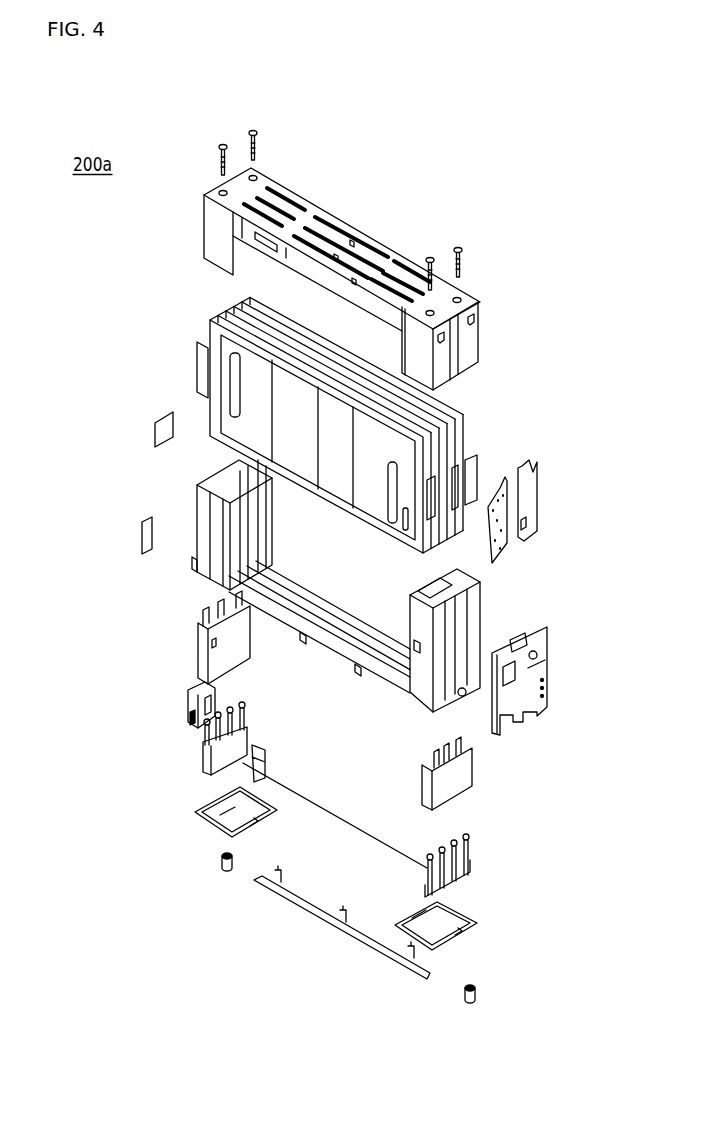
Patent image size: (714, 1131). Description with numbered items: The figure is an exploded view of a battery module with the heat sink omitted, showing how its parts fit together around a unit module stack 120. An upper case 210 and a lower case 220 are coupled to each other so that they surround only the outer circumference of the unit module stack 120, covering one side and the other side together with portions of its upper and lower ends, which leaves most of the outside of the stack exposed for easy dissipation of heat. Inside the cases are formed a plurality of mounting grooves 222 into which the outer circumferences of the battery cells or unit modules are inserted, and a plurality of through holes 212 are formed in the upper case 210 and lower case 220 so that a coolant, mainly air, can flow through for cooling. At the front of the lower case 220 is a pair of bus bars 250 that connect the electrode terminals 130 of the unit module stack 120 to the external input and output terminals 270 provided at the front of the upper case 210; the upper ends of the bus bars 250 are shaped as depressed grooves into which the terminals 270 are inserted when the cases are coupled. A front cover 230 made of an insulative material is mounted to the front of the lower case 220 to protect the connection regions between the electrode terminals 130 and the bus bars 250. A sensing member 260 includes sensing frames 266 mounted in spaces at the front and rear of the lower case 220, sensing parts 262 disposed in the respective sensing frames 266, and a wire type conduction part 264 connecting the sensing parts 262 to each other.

The upper case 210 is at (326, 189).
The through holes 212 is at (340, 234).
The external input and output terminals 270 is at (478, 298).
The unit module stack 120 is at (176, 326).
The electrode terminals 130 is at (467, 460).
The bus bars 250 is at (527, 493).
The lower case 220 is at (166, 490).
The mounting grooves 222 is at (330, 612).
The front cover 230 is at (528, 625).
The sensing member 260 is at (488, 757).
The sensing parts 262 is at (243, 763).
The wire type conduction part 264 is at (352, 824).
The sensing frames 266 is at (198, 623).